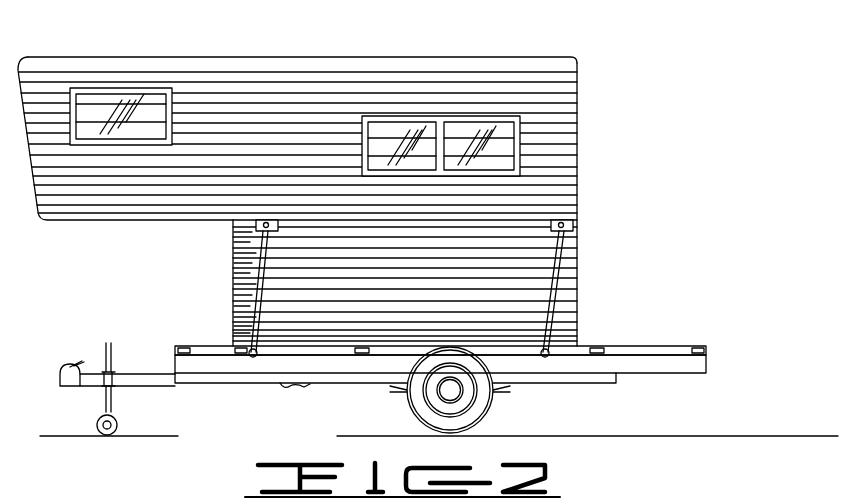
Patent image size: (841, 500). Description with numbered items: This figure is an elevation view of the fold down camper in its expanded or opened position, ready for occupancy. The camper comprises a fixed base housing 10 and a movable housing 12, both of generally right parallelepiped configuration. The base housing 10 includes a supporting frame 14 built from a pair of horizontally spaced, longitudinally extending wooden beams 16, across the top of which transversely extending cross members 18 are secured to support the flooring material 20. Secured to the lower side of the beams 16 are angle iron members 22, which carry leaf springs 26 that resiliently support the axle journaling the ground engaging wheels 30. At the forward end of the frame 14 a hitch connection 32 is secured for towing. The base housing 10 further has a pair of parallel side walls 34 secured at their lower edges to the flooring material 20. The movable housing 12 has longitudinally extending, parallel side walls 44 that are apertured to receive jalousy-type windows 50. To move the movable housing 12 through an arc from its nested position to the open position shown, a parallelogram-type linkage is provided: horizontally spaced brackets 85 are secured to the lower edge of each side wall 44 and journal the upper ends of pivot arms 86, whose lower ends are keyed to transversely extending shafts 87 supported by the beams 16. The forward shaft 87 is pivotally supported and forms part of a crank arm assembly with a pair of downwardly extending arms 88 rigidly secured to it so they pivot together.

The base housing 10 is at (582, 250).
The movable housing 12 is at (583, 98).
The supporting frame 14 is at (690, 340).
The longitudinally extending wooden beams 16 is at (680, 370).
The cross members 18 is at (188, 347).
The flooring material 20 is at (226, 347).
The angle iron members 22 is at (612, 383).
The leaf springs 26 is at (400, 392).
The ground engaging wheels 30 is at (480, 402).
The hitch connection 32 is at (132, 374).
The side walls 34 is at (405, 283).
The side walls 44 is at (330, 62).
The jalousy-type windows 50 is at (120, 110).
The brackets 85 is at (258, 228).
The pivot arms 86 is at (258, 276).
The transversely extending shafts 87 is at (252, 360).
The downwardly extending arms 88 is at (286, 390).